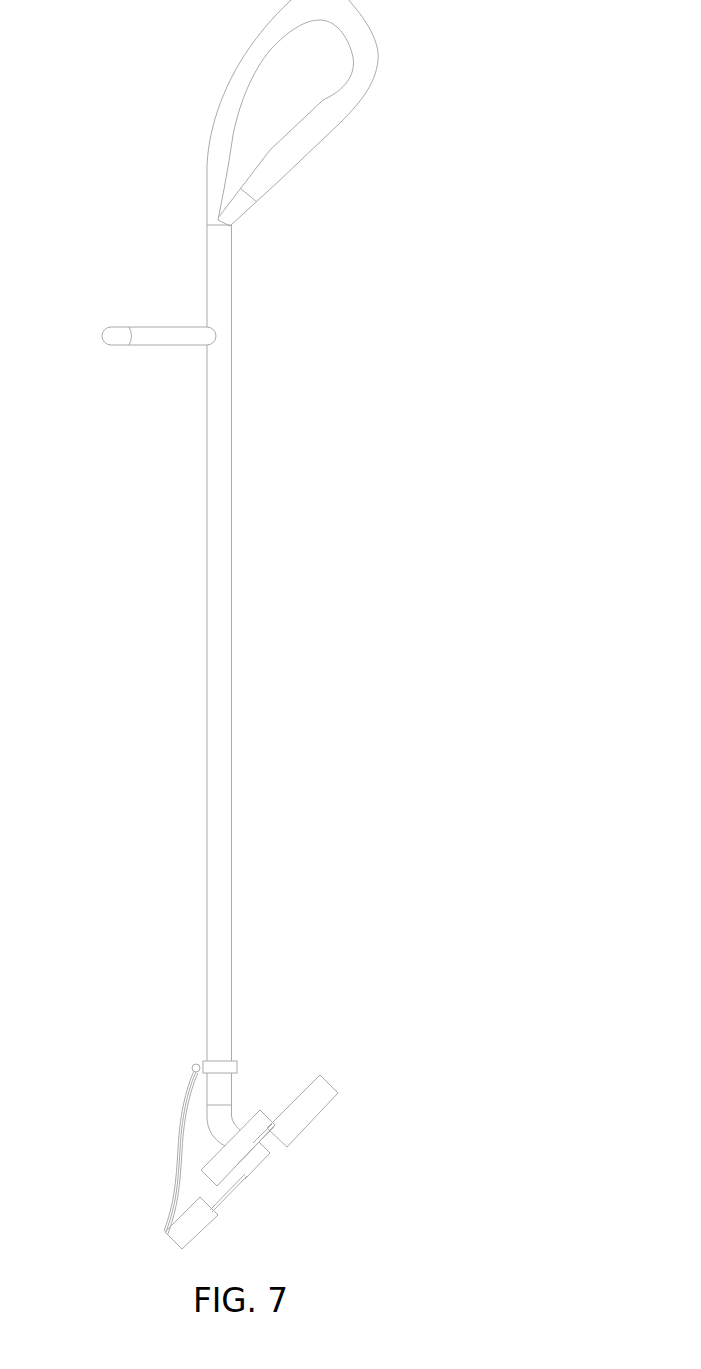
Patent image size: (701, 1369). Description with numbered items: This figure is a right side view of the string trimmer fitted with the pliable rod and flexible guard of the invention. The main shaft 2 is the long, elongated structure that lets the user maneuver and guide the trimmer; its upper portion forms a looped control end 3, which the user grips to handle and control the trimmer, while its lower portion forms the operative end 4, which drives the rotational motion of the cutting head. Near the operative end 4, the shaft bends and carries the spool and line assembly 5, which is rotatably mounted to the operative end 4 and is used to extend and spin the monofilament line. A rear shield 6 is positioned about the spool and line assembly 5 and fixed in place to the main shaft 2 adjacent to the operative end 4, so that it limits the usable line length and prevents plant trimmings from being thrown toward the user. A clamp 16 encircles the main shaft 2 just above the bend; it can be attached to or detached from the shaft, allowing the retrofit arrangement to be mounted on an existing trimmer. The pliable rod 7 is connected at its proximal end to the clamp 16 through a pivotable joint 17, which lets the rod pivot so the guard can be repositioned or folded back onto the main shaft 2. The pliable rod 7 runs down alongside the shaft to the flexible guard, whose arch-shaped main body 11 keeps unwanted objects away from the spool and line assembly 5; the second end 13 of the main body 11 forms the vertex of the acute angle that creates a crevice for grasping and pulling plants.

The main shaft 2 is at (232, 722).
The control end 3 is at (232, 266).
The operative end 4 is at (237, 1036).
The spool and line assembly 5 is at (268, 1163).
The rear shield 6 is at (330, 1090).
The pliable rod 7 is at (182, 1152).
The main body 11 is at (178, 1248).
The second end 13 is at (219, 1220).
The clamp 16 is at (238, 1071).
The pivotable joint 17 is at (193, 1067).